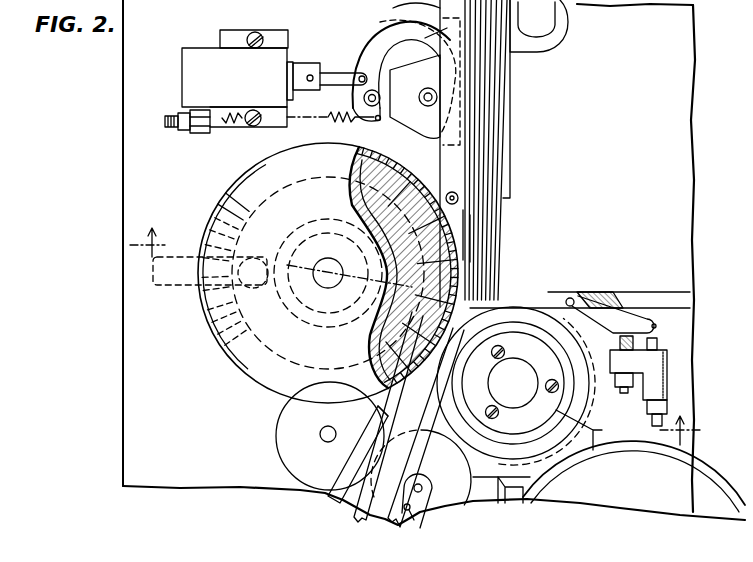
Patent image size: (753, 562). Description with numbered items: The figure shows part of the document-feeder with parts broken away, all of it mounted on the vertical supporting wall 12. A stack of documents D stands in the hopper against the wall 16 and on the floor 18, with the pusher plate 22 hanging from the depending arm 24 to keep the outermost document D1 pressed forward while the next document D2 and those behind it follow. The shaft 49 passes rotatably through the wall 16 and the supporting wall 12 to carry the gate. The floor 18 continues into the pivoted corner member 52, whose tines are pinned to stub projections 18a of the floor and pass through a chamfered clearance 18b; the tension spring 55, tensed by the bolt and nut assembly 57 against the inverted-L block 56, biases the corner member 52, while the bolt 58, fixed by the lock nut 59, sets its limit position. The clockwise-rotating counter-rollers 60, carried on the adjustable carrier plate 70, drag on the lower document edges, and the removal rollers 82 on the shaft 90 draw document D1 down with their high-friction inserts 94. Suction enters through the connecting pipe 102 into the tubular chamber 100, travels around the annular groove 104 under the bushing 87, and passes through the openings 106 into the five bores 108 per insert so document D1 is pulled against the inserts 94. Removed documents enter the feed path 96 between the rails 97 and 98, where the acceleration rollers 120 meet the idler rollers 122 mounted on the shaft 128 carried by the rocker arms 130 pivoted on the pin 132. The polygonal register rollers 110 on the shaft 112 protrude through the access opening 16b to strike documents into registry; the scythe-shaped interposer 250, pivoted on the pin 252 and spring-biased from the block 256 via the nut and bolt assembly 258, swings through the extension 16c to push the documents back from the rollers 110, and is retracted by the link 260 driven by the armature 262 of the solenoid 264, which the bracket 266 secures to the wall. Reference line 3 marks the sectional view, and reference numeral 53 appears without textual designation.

The supporting wall 12 is at (123, 101).
The solenoid 264 is at (237, 77).
The bracket 266 is at (240, 36).
The armature 262 is at (302, 66).
The link 260 is at (350, 73).
The pin 252 is at (300, 135).
The block 256 is at (203, 135).
The nut and bolt assembly 258 is at (166, 132).
The interposer 250 is at (372, 34).
The shaft 112 is at (420, 103).
The register rollers 110 is at (394, 74).
The access opening 16b is at (440, 69).
The wall 16 is at (411, 153).
The upward extension 16c is at (410, 79).
The outermost document D1 is at (426, 38).
The documents D is at (480, 72).
The pusher plate 22 is at (513, 135).
The depending arm 24 is at (563, 42).
The next outermost document D2 is at (536, 27).
The shaft 49 is at (459, 200).
The bores 108 is at (453, 257).
The rotatable shaft 90 is at (318, 282).
The annular groove 104 is at (328, 273).
The openings 106 is at (370, 277).
The tubular chamber 100 is at (240, 269).
The connecting pipe 102 is at (175, 288).
The section line 3- 3 is at (415, 330).
The removal rollers 82 is at (392, 163).
The bushing 87 is at (358, 200).
The inserts 94 is at (432, 185).
The acceleration rollers 120 is at (292, 456).
The rails 97 is at (330, 500).
The feed path 96 is at (378, 412).
The rails 98 is at (360, 516).
The rocker arms 130 is at (397, 523).
The idler rollers 122 is at (421, 467).
The shaft 128 is at (424, 488).
The pin 132 is at (412, 513).
The corner member 52 is at (522, 302).
The pulley hub 53 is at (567, 308).
The floor 18 is at (670, 294).
The stub projections 18a is at (549, 292).
The chamber 18b is at (601, 292).
The lock nut 59 is at (612, 360).
The block 56 is at (668, 378).
The tension spring 55 is at (656, 343).
The bolt 58 is at (623, 392).
The bolt and nut assembly 57 is at (668, 420).
The counter-rollers 60 is at (553, 447).
The carrier plate 70 is at (492, 502).